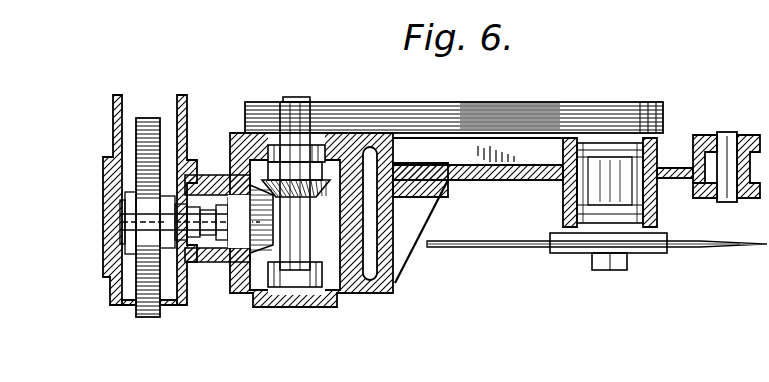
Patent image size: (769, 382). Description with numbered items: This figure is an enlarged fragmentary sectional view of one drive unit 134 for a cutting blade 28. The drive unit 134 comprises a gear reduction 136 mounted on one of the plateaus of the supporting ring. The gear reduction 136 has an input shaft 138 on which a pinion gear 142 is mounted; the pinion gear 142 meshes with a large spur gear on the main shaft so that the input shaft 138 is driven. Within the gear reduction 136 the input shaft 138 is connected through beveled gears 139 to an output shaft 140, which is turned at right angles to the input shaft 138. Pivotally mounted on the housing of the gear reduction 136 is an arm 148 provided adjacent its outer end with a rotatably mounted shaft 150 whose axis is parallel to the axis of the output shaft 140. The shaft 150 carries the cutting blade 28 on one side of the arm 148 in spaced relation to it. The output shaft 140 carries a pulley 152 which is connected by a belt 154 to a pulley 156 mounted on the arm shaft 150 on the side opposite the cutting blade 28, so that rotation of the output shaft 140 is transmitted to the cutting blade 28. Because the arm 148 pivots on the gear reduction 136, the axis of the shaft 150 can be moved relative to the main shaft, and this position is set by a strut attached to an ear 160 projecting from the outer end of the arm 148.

The cutting blade 28 is at (720, 250).
The drive unit 134 is at (408, 280).
The gear reduction 136 is at (222, 122).
The input shaft 138 is at (160, 222).
The beveled gears 139 is at (270, 221).
The output shaft 140 is at (297, 97).
The pinion gear 142 is at (147, 116).
The arm 148 is at (482, 184).
The arm shaft 150 is at (612, 188).
The pulley 152 is at (388, 78).
The belt 154 is at (500, 102).
The pulley 156 is at (550, 118).
The ear 160 is at (760, 158).